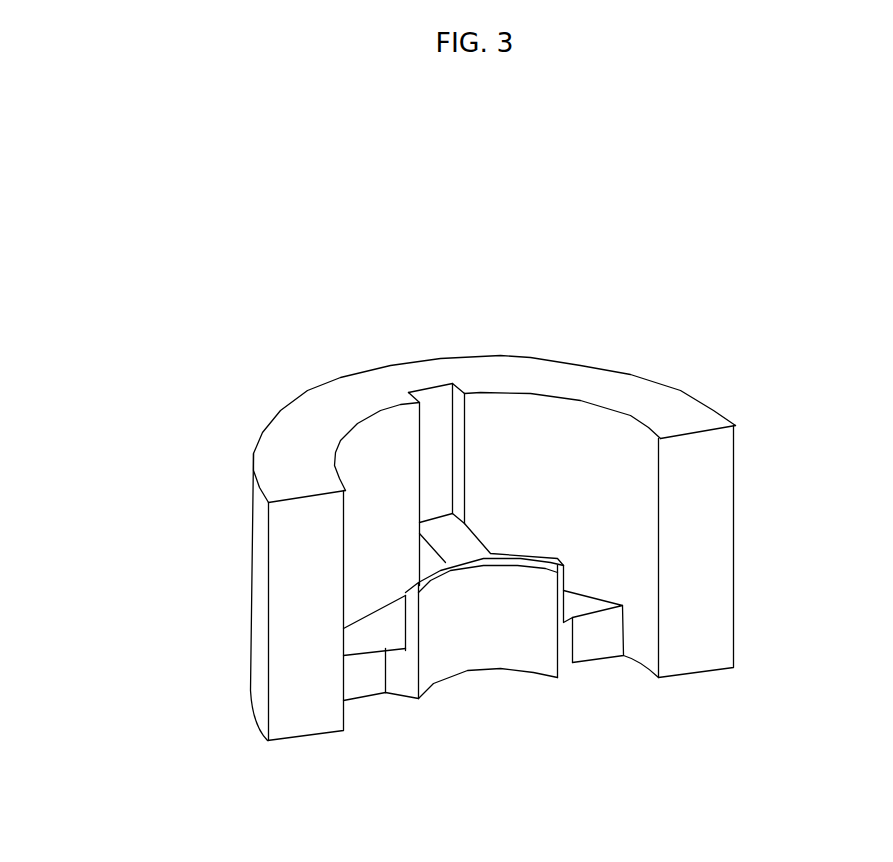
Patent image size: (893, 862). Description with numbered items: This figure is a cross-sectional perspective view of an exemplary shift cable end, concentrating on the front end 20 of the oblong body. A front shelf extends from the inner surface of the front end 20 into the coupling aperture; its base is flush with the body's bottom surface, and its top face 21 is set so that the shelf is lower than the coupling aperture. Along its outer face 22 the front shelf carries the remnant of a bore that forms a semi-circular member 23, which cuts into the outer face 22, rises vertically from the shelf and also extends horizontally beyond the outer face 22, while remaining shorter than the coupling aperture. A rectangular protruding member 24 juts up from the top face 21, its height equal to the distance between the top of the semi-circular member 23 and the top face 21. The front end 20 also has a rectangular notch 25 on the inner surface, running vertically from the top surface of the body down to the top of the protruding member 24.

The front end 20 is at (288, 395).
The top face 21 is at (380, 623).
The outer face 22 is at (365, 678).
The semi-circular member 23 is at (472, 632).
The protruding member 24 is at (455, 540).
The notch 25 is at (446, 415).